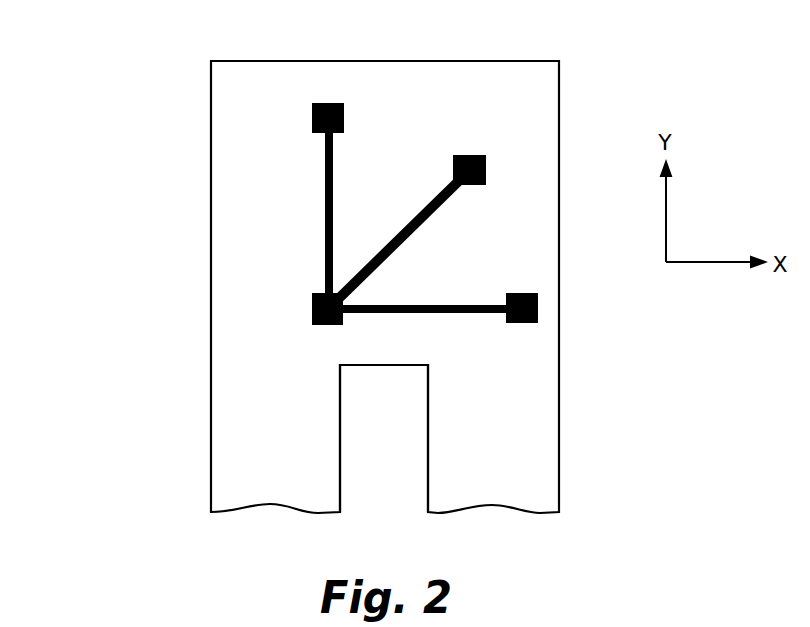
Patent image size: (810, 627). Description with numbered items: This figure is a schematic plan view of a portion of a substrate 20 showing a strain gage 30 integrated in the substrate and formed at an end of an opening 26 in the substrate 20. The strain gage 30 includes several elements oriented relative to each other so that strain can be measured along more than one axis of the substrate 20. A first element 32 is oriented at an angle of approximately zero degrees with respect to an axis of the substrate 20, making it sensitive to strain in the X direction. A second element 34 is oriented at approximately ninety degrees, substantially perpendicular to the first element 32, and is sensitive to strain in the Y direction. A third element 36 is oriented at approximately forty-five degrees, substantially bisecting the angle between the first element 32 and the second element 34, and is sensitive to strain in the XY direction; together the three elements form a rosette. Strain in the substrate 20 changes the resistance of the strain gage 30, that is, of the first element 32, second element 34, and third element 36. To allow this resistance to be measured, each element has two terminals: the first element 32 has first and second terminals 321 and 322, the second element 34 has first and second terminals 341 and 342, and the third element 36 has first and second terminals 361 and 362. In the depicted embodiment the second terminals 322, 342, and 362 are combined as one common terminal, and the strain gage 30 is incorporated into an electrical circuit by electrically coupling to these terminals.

The substrate 20 is at (548, 423).
The opening 26 is at (380, 462).
The strain gage 30 is at (356, 168).
The first element 32 is at (447, 305).
The first terminal of first element 321 is at (538, 310).
The second terminal of first element 322 is at (180, 309).
The second element 34 is at (325, 193).
The first terminal of second element 341 is at (330, 103).
The second terminal of second element 342 is at (327, 309).
The third element 36 is at (427, 203).
The first terminal of third element 361 is at (476, 155).
The second terminal of third element 362 is at (312, 309).